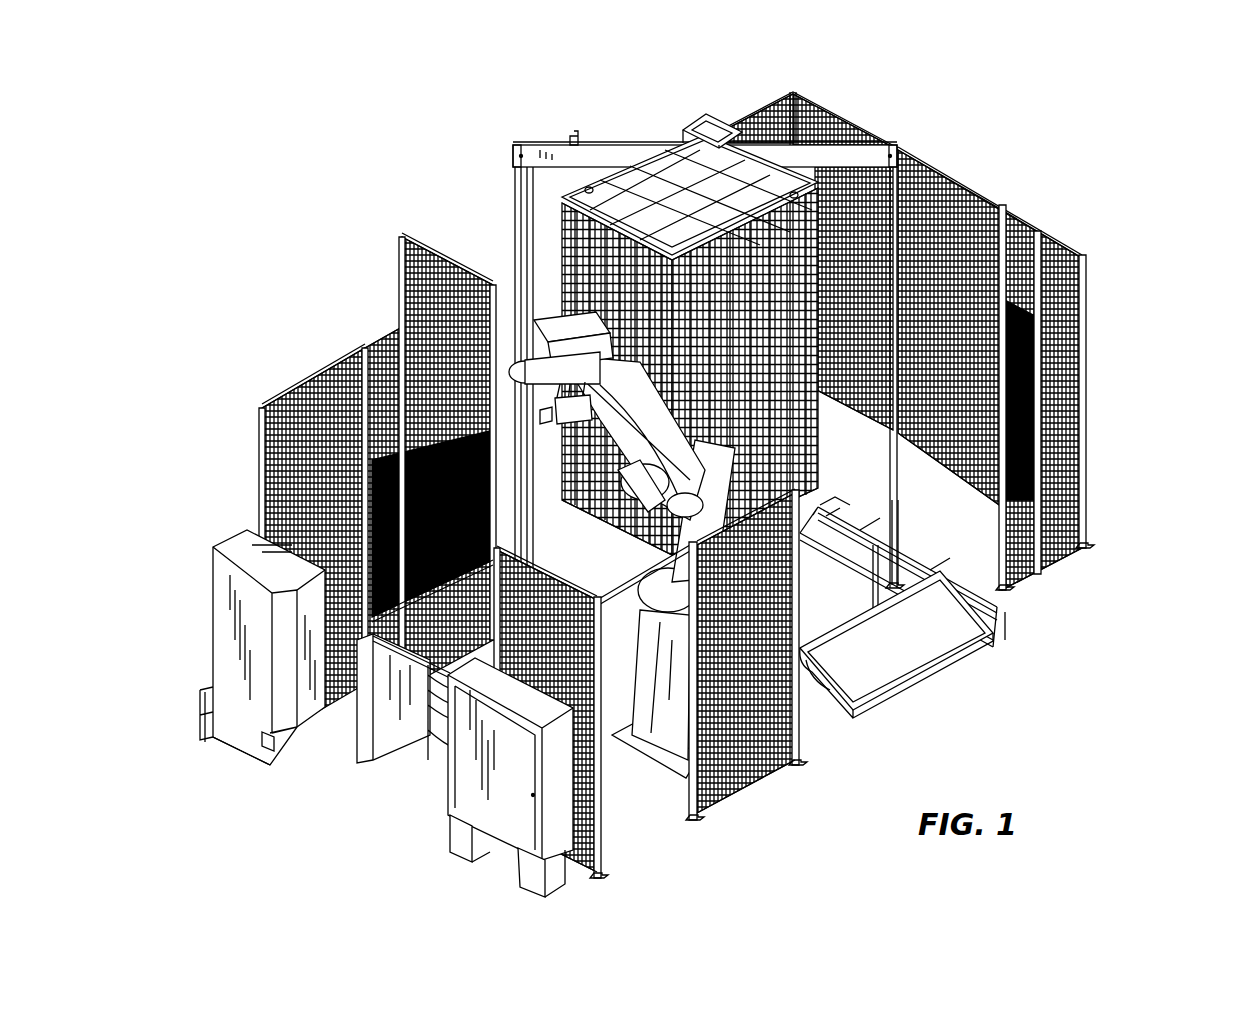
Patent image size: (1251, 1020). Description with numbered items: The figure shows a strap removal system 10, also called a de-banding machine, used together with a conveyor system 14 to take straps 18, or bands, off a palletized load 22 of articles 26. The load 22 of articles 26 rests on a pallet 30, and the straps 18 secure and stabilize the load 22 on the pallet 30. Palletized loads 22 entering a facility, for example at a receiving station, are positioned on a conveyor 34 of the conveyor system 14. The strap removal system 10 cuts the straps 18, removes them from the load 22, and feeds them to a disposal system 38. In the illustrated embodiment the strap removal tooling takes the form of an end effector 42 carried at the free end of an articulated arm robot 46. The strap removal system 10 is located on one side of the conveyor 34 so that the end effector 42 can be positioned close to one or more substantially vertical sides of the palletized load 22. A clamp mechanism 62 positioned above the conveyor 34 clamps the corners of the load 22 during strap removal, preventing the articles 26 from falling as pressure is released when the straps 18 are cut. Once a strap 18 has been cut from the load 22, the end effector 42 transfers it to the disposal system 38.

The strap removal system 10 is at (266, 161).
The conveyor system 14 is at (1010, 634).
The straps 18 is at (692, 205).
The palletized load 22 is at (702, 118).
The articles 26 is at (571, 275).
The pallet 30 is at (820, 505).
The conveyor 34 is at (833, 670).
The disposal system 38 is at (412, 770).
The end effector 42 is at (546, 444).
The articulated arm robot 46 is at (1020, 225).
The clamp mechanism 62 is at (858, 158).